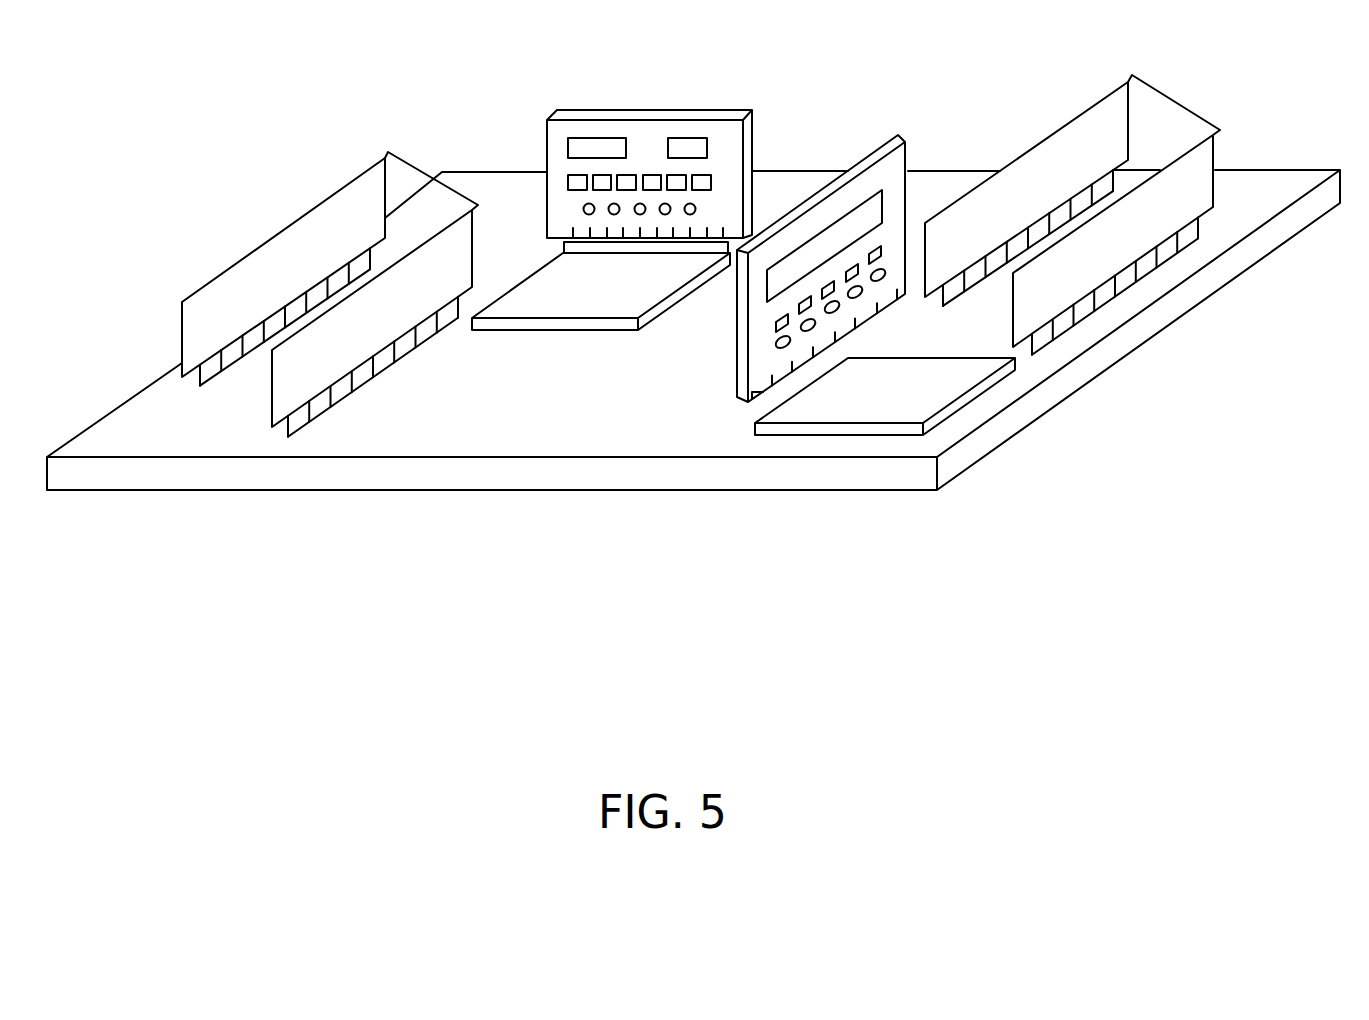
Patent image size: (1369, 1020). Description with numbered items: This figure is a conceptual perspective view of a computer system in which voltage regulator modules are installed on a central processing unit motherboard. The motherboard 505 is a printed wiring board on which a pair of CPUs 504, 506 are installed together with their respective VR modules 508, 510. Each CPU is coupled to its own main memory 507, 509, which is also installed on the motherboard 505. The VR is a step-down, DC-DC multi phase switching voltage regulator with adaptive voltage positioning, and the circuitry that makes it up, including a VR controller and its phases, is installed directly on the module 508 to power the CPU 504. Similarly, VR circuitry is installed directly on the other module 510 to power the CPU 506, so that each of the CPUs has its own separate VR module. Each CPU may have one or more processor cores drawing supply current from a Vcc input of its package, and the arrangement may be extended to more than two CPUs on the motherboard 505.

The CPU 504 is at (617, 320).
The motherboard 505 is at (1177, 305).
The CPU 506 is at (968, 395).
The main memory 507 is at (442, 172).
The VR module 508 is at (752, 133).
The main memory 509 is at (1178, 102).
The VR module 510 is at (906, 153).